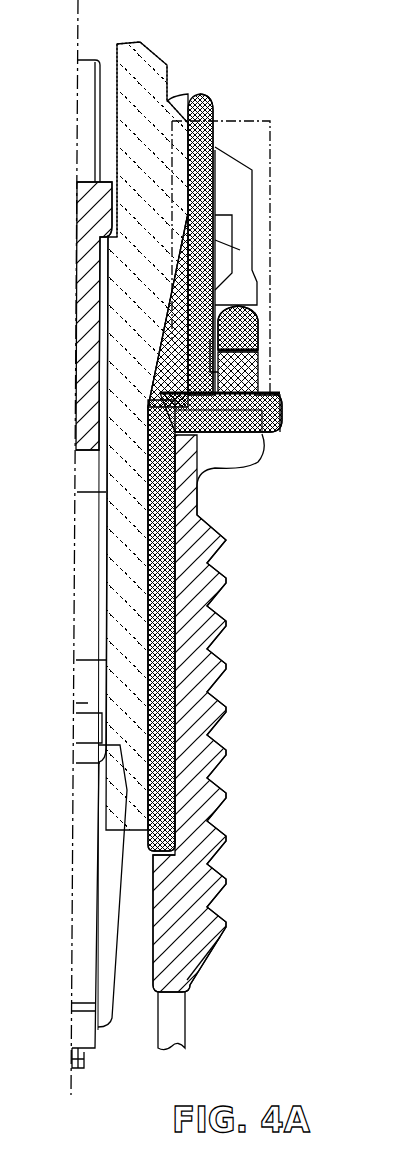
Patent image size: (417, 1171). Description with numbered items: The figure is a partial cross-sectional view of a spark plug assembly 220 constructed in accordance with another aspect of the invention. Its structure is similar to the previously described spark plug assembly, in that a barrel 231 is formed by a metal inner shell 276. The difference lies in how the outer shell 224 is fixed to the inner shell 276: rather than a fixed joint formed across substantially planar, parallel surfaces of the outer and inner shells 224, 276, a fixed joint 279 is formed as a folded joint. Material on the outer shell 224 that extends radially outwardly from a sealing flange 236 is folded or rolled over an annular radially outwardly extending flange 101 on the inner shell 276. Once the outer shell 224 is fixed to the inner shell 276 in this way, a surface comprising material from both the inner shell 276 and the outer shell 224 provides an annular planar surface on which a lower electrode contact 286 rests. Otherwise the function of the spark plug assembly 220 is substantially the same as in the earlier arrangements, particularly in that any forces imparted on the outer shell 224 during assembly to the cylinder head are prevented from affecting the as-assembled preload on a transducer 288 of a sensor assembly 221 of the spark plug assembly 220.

The spark plug assembly 220 is at (226, 58).
The sensor assembly 221 is at (272, 215).
The barrel 231 is at (272, 102).
The transducer 288 is at (256, 350).
The fixed joint 279 is at (292, 398).
The lower electrode contact 286 is at (268, 405).
The annular radially outwardly extending flange 101 is at (262, 432).
The sealing flange 236 is at (255, 455).
The metal inner shell 276 is at (148, 550).
The outer shell 224 is at (232, 580).